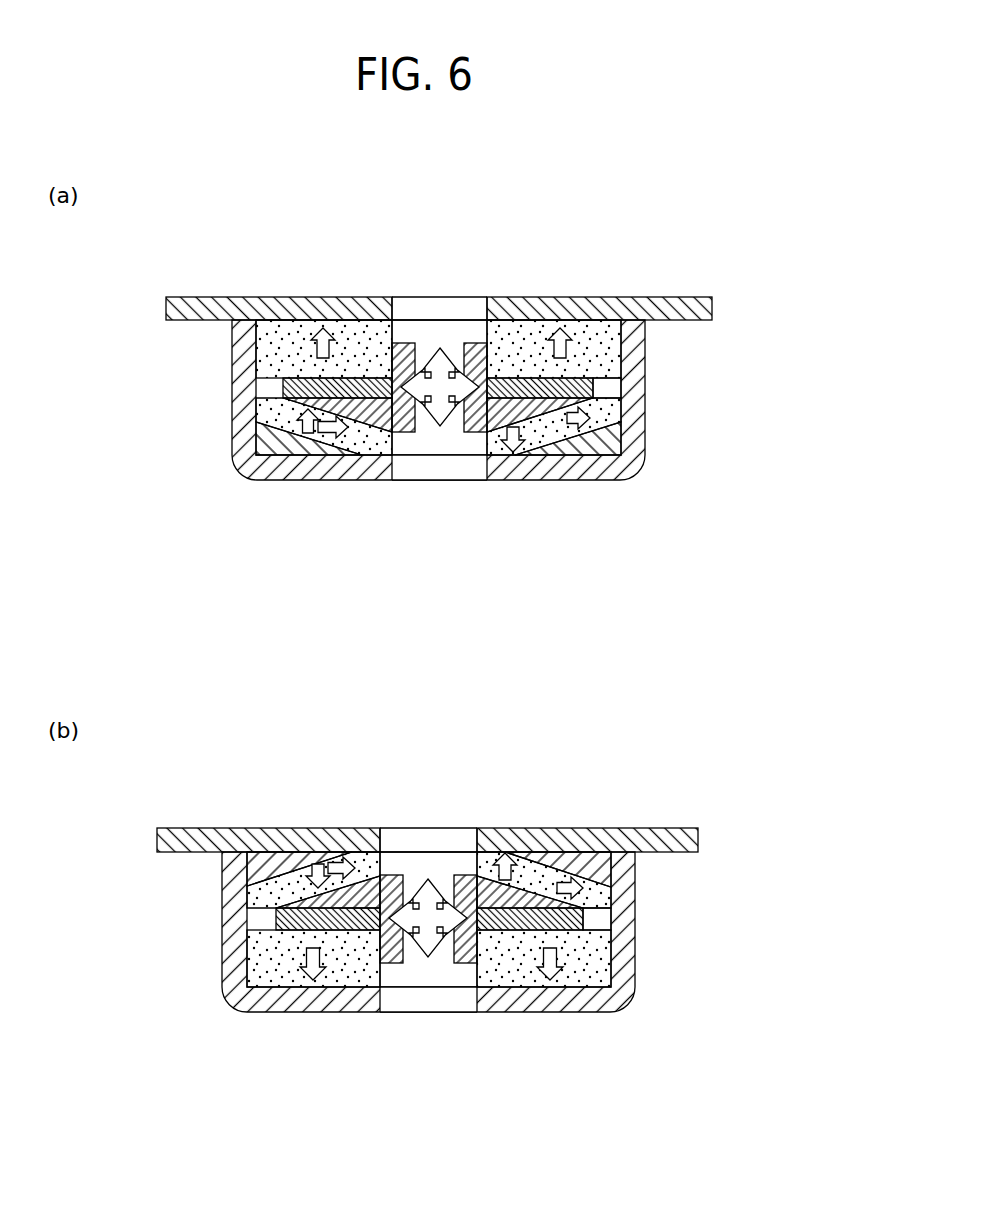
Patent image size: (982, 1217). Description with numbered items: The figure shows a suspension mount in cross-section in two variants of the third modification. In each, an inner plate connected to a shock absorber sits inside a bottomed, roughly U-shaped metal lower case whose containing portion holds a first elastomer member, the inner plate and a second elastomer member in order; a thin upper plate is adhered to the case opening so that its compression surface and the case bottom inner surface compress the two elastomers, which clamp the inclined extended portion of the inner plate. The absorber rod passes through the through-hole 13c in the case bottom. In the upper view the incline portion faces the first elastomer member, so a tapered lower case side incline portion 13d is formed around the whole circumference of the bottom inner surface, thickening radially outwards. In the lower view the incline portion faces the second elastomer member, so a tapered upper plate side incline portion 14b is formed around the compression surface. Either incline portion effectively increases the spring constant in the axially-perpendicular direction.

The through-hole 13c is at (477, 474).
The lower case side incline portion 13d is at (281, 448).
The upper plate side incline portion 14b is at (288, 857).